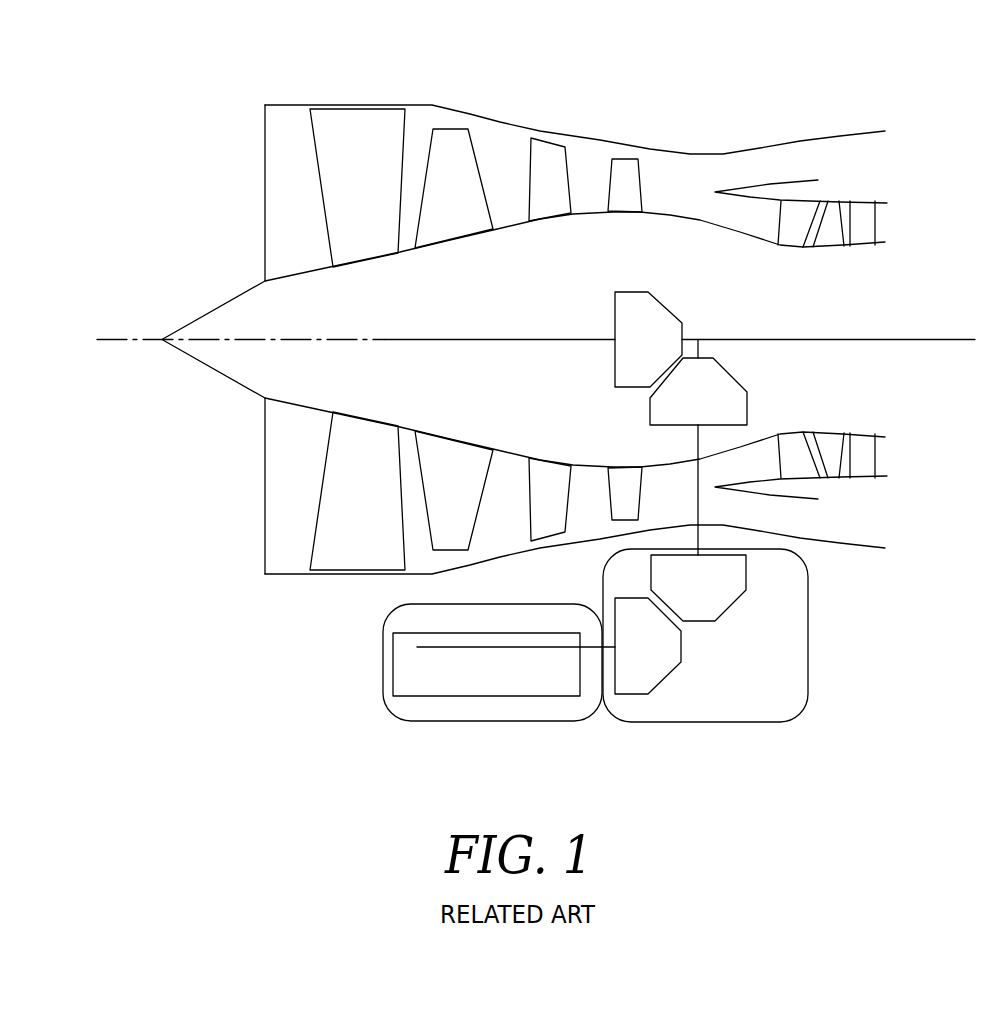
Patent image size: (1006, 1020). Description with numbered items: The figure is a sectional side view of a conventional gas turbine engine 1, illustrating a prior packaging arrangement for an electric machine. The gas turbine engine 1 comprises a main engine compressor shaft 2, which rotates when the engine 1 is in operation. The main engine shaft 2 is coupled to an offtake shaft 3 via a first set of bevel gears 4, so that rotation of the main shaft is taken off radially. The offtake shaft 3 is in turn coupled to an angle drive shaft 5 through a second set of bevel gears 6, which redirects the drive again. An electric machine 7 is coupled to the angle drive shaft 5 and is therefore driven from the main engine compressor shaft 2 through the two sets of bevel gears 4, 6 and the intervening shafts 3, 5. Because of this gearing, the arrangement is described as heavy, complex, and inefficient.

The gas turbine engine 1 is at (206, 148).
The main engine compressor shaft 2 is at (680, 179).
The offtake shaft 3 is at (834, 490).
The first set of bevel gears 4 is at (447, 399).
The angle drive shaft 5 is at (462, 624).
The second set of bevel gears 6 is at (742, 635).
The electric machine 7 is at (443, 662).